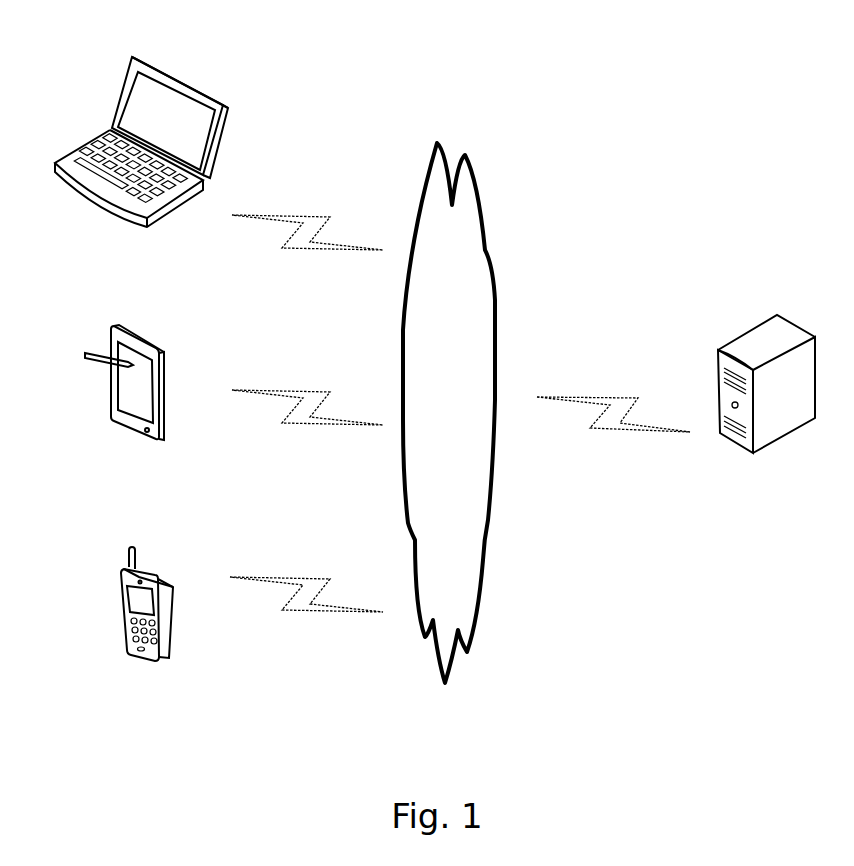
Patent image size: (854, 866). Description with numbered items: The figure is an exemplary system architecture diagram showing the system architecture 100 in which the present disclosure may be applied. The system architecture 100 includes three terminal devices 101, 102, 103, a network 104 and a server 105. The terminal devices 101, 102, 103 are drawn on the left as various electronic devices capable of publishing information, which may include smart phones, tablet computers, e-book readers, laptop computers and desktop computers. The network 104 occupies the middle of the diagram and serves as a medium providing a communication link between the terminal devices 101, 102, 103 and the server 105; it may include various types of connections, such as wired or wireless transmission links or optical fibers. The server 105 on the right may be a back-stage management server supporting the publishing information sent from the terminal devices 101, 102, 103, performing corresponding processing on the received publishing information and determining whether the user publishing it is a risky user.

The system architecture 100 is at (673, 46).
The terminal device 101 is at (147, 625).
The terminal device 102 is at (124, 404).
The terminal device 103 is at (141, 163).
The network 104 is at (449, 413).
The server 105 is at (766, 409).